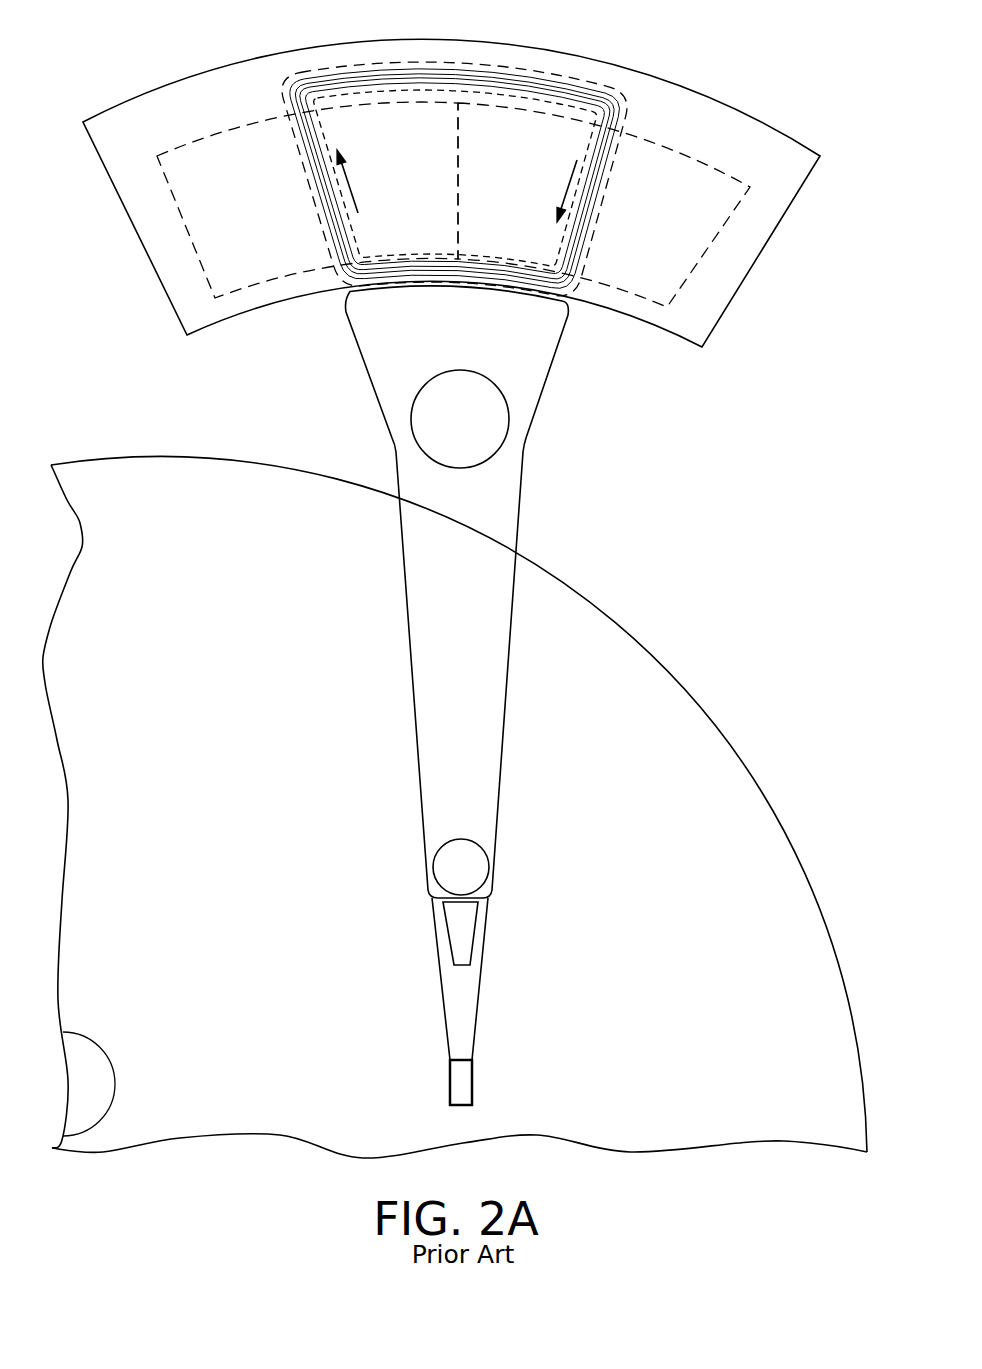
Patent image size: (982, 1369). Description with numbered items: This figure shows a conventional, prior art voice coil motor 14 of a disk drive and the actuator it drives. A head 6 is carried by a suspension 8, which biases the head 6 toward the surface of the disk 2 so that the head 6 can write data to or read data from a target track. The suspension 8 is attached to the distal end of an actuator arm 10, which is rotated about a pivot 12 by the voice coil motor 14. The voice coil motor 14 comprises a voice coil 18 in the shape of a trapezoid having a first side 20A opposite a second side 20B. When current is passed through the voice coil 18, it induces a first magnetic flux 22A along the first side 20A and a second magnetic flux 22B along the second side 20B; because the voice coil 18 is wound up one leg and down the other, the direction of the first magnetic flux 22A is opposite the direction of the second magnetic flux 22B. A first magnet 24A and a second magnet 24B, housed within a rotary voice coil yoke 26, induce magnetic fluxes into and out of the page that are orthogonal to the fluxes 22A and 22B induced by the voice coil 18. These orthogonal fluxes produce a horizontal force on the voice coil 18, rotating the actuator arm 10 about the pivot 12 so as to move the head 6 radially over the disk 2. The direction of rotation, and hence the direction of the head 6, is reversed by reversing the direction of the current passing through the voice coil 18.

The disk 2 is at (646, 598).
The head 6 is at (468, 1090).
The suspension 8 is at (474, 1010).
The actuator arm 10 is at (502, 698).
The pivot 12 is at (448, 434).
The voice coil motor 14 is at (496, 30).
The voice coil 18 is at (277, 86).
The first side 20A is at (298, 152).
The second side 20B is at (612, 170).
The first magnetic flux 22A is at (350, 180).
The second magnetic flux 22B is at (569, 183).
The first magnet 24A is at (232, 242).
The second magnet 24B is at (645, 254).
The rotary voice coil yoke 26 is at (765, 167).